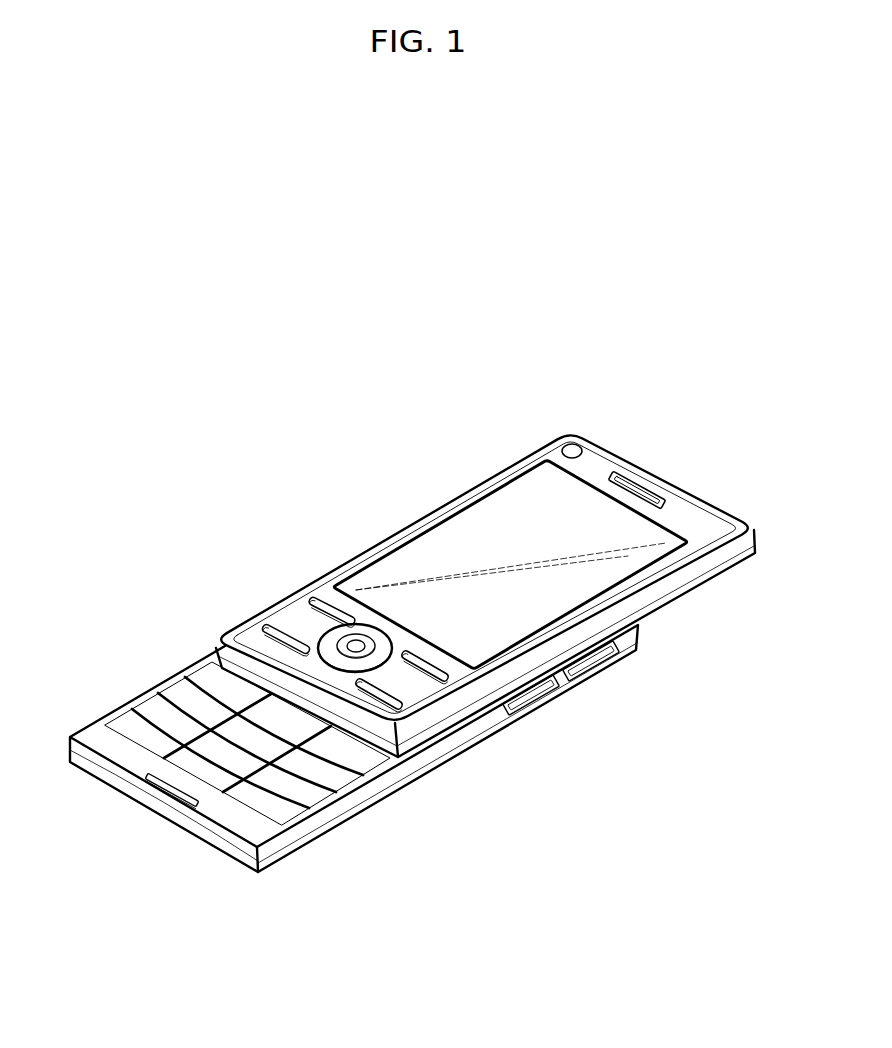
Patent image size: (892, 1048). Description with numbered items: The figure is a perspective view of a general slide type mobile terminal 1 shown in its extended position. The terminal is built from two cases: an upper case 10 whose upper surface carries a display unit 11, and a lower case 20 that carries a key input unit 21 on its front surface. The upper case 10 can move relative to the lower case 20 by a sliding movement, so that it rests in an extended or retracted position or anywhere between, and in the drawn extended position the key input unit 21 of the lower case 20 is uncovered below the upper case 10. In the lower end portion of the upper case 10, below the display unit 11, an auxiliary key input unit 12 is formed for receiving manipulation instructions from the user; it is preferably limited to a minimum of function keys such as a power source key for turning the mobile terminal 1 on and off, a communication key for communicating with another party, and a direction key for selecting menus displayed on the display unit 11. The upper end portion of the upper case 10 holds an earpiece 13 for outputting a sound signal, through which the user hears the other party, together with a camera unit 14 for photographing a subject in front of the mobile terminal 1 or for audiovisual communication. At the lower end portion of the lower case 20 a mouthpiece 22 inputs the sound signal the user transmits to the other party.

The mobile terminal 1 is at (256, 384).
The upper case 10 is at (757, 523).
The display unit 11 is at (480, 533).
The auxiliary key input unit 12 is at (327, 602).
The earpiece 13 is at (640, 490).
The camera unit 14 is at (571, 444).
The lower case 20 is at (650, 633).
The key input unit 21 is at (162, 718).
The mouthpiece 22 is at (151, 780).